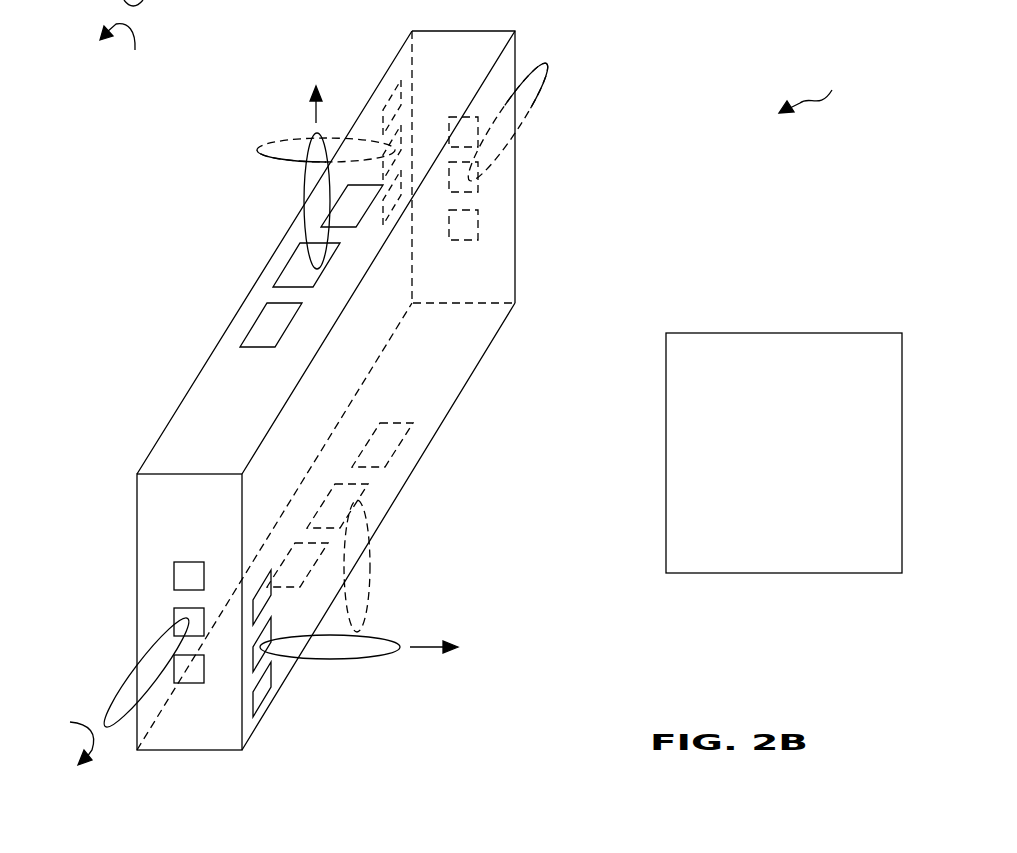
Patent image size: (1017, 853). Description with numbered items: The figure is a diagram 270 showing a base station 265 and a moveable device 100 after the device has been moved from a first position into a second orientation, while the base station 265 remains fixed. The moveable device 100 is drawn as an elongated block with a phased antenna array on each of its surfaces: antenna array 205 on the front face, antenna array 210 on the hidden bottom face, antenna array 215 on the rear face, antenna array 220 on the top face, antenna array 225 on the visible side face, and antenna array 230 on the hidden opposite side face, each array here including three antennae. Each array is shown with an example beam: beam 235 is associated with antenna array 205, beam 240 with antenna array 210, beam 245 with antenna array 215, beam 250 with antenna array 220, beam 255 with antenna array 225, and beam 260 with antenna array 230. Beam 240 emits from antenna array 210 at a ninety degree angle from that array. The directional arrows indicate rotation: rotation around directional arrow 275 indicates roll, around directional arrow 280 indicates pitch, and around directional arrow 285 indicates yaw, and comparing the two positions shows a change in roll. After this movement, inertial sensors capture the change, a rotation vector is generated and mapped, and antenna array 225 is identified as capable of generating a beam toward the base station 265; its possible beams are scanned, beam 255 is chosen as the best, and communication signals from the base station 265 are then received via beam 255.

The moveable device 100 is at (446, 30).
The antenna array 205 is at (177, 562).
The antenna array 210 is at (379, 423).
The antenna array 215 is at (452, 240).
The antenna array 220 is at (240, 347).
The antenna array 225 is at (260, 703).
The antenna array 230 is at (398, 74).
The beam 235 is at (118, 692).
The beam 240 is at (368, 567).
The beam 245 is at (535, 78).
The beam 250 is at (300, 182).
The beam 255 is at (373, 657).
The beam 260 is at (257, 150).
The base station 265 is at (817, 333).
The diagram 270 is at (828, 90).
The directional arrow 275 is at (97, 394).
The directional arrow 280 is at (313, 108).
The directional arrow 285 is at (420, 645).